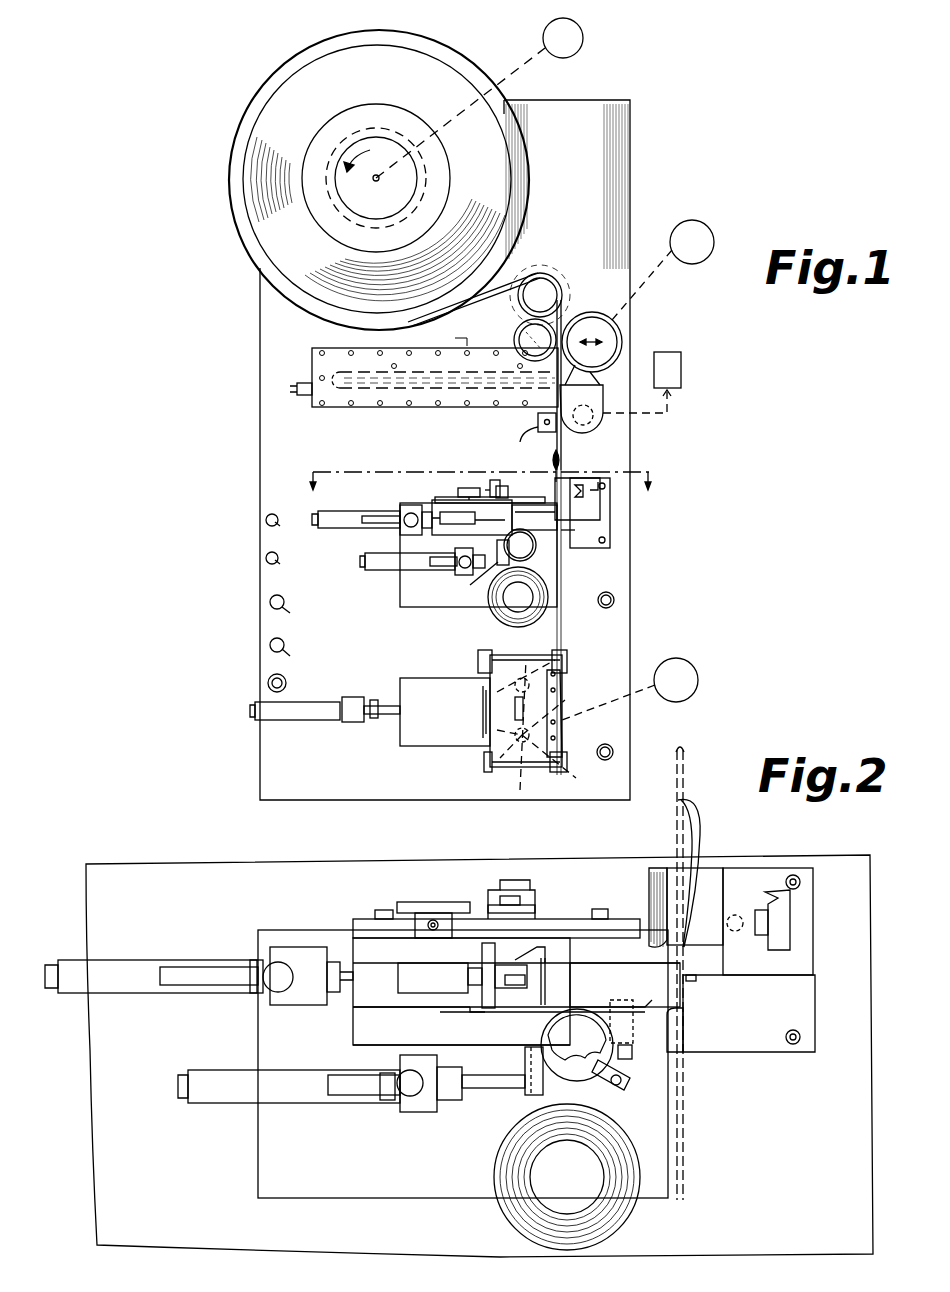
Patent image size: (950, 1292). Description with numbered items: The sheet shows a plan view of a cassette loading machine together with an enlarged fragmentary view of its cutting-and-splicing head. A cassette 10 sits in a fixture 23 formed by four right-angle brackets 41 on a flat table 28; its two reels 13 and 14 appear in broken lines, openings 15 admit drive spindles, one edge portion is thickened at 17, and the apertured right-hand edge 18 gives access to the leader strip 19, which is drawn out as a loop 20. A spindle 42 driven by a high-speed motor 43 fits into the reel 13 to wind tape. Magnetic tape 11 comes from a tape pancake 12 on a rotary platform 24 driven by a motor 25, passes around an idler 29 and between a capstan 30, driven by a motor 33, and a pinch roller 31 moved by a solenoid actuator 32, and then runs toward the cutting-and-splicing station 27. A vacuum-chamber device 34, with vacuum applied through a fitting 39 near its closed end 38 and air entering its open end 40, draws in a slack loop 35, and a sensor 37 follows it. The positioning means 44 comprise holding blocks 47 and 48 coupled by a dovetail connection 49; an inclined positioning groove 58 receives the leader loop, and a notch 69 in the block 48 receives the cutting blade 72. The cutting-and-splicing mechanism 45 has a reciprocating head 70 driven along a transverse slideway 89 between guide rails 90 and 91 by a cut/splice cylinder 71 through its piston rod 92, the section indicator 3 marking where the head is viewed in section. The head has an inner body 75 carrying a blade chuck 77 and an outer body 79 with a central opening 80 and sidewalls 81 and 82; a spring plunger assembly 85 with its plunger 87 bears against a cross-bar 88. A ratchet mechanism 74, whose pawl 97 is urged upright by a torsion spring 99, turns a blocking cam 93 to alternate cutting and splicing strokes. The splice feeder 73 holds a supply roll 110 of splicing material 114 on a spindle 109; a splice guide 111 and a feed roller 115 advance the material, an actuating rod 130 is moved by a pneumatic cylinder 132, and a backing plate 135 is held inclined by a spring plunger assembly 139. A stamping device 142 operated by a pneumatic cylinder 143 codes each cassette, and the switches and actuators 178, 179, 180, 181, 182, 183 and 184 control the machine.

In FIG. 1, the section line 3- 3 is at (478, 498).
In FIG. 1, the cassette 10 is at (556, 448).
In FIG. 1, the magnetic tape 11 is at (510, 295).
In FIG. 1, the bulk supply roll 12 is at (268, 232).
In FIG. 1, the reel 13 is at (492, 755).
In FIG. 1, the reel 14 is at (480, 693).
In FIG. 1, the openings 15 is at (528, 655).
In FIG. 1, the thickened edge portion 17 is at (560, 700).
In FIG. 1, the right-hand edge 18 is at (565, 732).
In FIG. 1, the strip of leader material 19 is at (566, 763).
In FIG. 1, the loop 20 is at (548, 464).
In FIG. 2, the loop 20 is at (700, 845).
In FIG. 1, the fixture 23 is at (552, 790).
In FIG. 1, the rotary platform 24 is at (518, 158).
In FIG. 1, the motor 25 is at (583, 36).
In FIG. 1, the cutting-and-splicing station 27 is at (650, 523).
In FIG. 1, the table 28 is at (260, 317).
In FIG. 1, the idler 29 is at (540, 285).
In FIG. 1, the capstan 30 is at (516, 340).
In FIG. 1, the pinch roller 31 is at (622, 322).
In FIG. 1, the solenoid actuator 32 is at (675, 352).
In FIG. 1, the motor 33 is at (702, 222).
In FIG. 1, the vacuum-chamber device 34 is at (447, 335).
In FIG. 1, the loop 35 is at (418, 405).
In FIG. 1, the sensor 37 is at (538, 418).
In FIG. 1, the closed end 38 is at (312, 364).
In FIG. 1, the fitting 39 is at (297, 392).
In FIG. 1, the open end 40 is at (591, 399).
In FIG. 1, the right-angle brackets 41 is at (478, 655).
In FIG. 1, the spindle 42 is at (486, 727).
In FIG. 1, the high-speed motor 43 is at (697, 672).
In FIG. 1, the positioning means 44 is at (612, 482).
In FIG. 2, the positioning means 44 is at (715, 1058).
In FIG. 1, the cutting-and-splicing mechanism 45 is at (410, 503).
In FIG. 2, the cutting-and-splicing mechanism 45 is at (340, 1030).
In FIG. 1, the holding member 47 is at (590, 480).
In FIG. 2, the holding member 47 is at (750, 870).
In FIG. 1, the holding member 48 is at (612, 535).
In FIG. 2, the holding member 48 is at (775, 1045).
In FIG. 1, the dovetail connection 49 is at (607, 486).
In FIG. 2, the dovetail connection 49 is at (790, 950).
In FIG. 2, the third positioning groove 58 is at (688, 904).
In FIG. 2, the notch 69 is at (690, 981).
In FIG. 1, the reciprocating head 70 is at (432, 528).
In FIG. 2, the reciprocating head 70 is at (470, 1005).
In FIG. 1, the cut/splice cylinder 71 is at (345, 528).
In FIG. 2, the cut/splice cylinder 71 is at (203, 992).
In FIG. 2, the cutting blade 72 is at (527, 970).
In FIG. 1, the splice feeder 73 is at (470, 590).
In FIG. 2, the splice feeder 73 is at (615, 1092).
In FIG. 1, the ratchet mechanism 74 is at (462, 488).
In FIG. 2, the ratchet mechanism 74 is at (432, 902).
In FIG. 2, the inner body 75 is at (450, 1007).
In FIG. 2, the blade chuck 77 is at (530, 952).
In FIG. 2, the outer body 79 is at (355, 945).
In FIG. 2, the central opening 80 is at (546, 1000).
In FIG. 2, the sidewall 81 is at (410, 1007).
In FIG. 2, the sidewall 82 is at (365, 973).
In FIG. 2, the spring plunger assembly 85 is at (480, 1012).
In FIG. 2, the spring-loaded plunger 87 is at (462, 970).
In FIG. 2, the cross-bar 88 is at (479, 964).
In FIG. 1, the transverse slideway 89 is at (530, 510).
In FIG. 2, the transverse slideway 89 is at (625, 985).
In FIG. 1, the guide rail 90 is at (509, 484).
In FIG. 2, the guide rail 90 is at (545, 919).
In FIG. 1, the guide rail 91 is at (576, 540).
In FIG. 2, the guide rail 91 is at (355, 1045).
In FIG. 1, the piston rod 92 is at (440, 500).
In FIG. 2, the piston rod 92 is at (340, 992).
In FIG. 2, the blocking cam 93 is at (445, 902).
In FIG. 2, the pawl 97 is at (511, 917).
In FIG. 2, the torsion spring 99 is at (515, 892).
In FIG. 1, the spindle 109 is at (525, 605).
In FIG. 2, the spindle 109 is at (533, 1190).
In FIG. 1, the supply roll 110 is at (495, 615).
In FIG. 2, the supply roll 110 is at (500, 1155).
In FIG. 1, the splice guide 111 is at (500, 540).
In FIG. 2, the splice guide 111 is at (525, 1060).
In FIG. 2, the splicing material 114 is at (530, 1095).
In FIG. 1, the feed roller 115 is at (530, 555).
In FIG. 2, the feed roller 115 is at (552, 1020).
In FIG. 1, the actuating rod 130 is at (478, 570).
In FIG. 2, the actuating rod 130 is at (465, 1105).
In FIG. 1, the pneumatic cylinder 132 is at (398, 570).
In FIG. 2, the pneumatic cylinder 132 is at (293, 1103).
In FIG. 2, the backing plate 135 is at (618, 1005).
In FIG. 2, the spring plunger assembly 139 is at (626, 1059).
In FIG. 1, the stamping device 142 is at (400, 745).
In FIG. 1, the pneumatic cylinder 143 is at (298, 722).
In FIG. 1, the main switch 178 is at (266, 520).
In FIG. 1, the switch 179 is at (266, 558).
In FIG. 1, the pushbutton actuator 180 is at (300, 610).
In FIG. 1, the actuator 181 is at (300, 652).
In FIG. 1, the start switch 182 is at (286, 684).
In FIG. 1, the stop switch 183 is at (612, 595).
In FIG. 1, the switch 184 is at (612, 748).